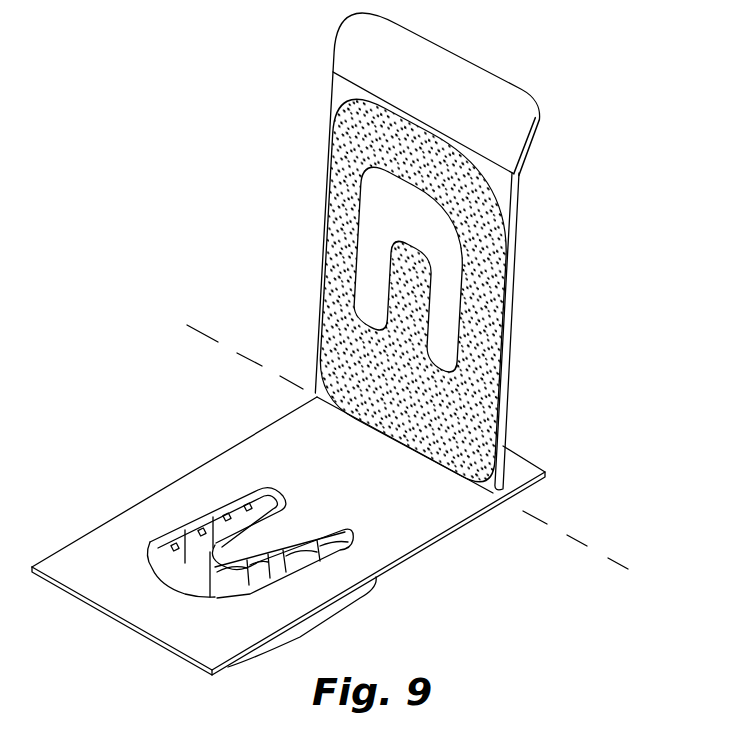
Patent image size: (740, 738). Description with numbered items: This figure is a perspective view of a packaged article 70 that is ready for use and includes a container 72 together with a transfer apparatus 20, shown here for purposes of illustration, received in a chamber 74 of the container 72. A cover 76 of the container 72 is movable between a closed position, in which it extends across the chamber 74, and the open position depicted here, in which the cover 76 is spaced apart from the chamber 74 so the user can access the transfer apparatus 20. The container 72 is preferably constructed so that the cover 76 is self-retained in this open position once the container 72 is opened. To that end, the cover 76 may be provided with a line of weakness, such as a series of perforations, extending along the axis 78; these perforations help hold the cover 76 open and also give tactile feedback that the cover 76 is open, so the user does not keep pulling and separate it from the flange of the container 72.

The packaged article 70 is at (213, 278).
The container 72 is at (435, 565).
The chamber 74 is at (158, 540).
The transfer apparatus 20 is at (208, 518).
The cover 76 is at (342, 100).
The axis 78 is at (568, 534).